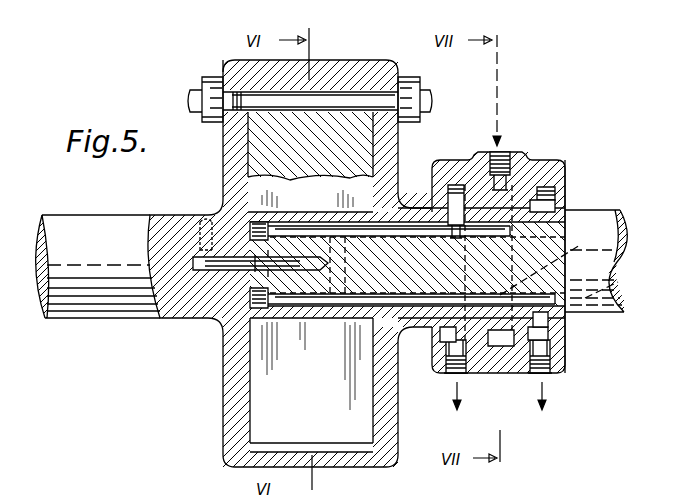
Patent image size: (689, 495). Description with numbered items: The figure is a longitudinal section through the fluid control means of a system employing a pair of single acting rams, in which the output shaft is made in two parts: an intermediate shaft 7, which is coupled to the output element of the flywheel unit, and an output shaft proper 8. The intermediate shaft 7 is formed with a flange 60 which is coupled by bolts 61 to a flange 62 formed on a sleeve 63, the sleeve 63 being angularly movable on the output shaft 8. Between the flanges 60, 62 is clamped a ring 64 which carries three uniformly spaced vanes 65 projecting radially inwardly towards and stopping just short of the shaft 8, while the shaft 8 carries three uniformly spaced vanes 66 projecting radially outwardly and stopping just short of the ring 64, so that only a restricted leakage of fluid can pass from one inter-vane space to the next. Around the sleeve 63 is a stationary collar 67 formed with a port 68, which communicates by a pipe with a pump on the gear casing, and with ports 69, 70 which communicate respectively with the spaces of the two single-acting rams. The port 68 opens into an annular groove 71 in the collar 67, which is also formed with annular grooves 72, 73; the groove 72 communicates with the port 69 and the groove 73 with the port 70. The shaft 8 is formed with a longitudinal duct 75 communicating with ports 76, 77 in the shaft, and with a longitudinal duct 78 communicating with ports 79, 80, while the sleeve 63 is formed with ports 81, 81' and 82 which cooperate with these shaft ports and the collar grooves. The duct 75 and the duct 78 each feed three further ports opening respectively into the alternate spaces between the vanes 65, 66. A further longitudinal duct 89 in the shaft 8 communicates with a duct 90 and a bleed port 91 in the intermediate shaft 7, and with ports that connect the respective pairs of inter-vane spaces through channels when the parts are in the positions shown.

The intermediate shaft 7 is at (110, 300).
The output shaft proper 8 is at (588, 222).
The flange 60 is at (232, 167).
The bolts 61 is at (330, 95).
The flange 62 is at (385, 150).
The sleeve 63 is at (413, 204).
The ring 64 is at (338, 448).
The vanes 65 is at (247, 128).
The vanes 66 is at (262, 389).
The stationary collar 67 is at (565, 178).
The port 68 is at (500, 158).
The port 69 is at (452, 374).
The port 70 is at (543, 374).
The annular groove 71 is at (503, 342).
The annular groove 72 is at (445, 338).
The annular groove 73 is at (550, 334).
The longitudinal duct 75 is at (330, 214).
The port 76 is at (457, 184).
The port 77 is at (524, 172).
The longitudinal duct 78 is at (355, 306).
The port 79 is at (547, 267).
The port 80 is at (620, 281).
The port 81 is at (550, 158).
The port 81' is at (489, 153).
The port 82 is at (552, 325).
The longitudinal duct 89 is at (280, 312).
The duct 90 is at (215, 272).
The bleed port 91 is at (194, 214).